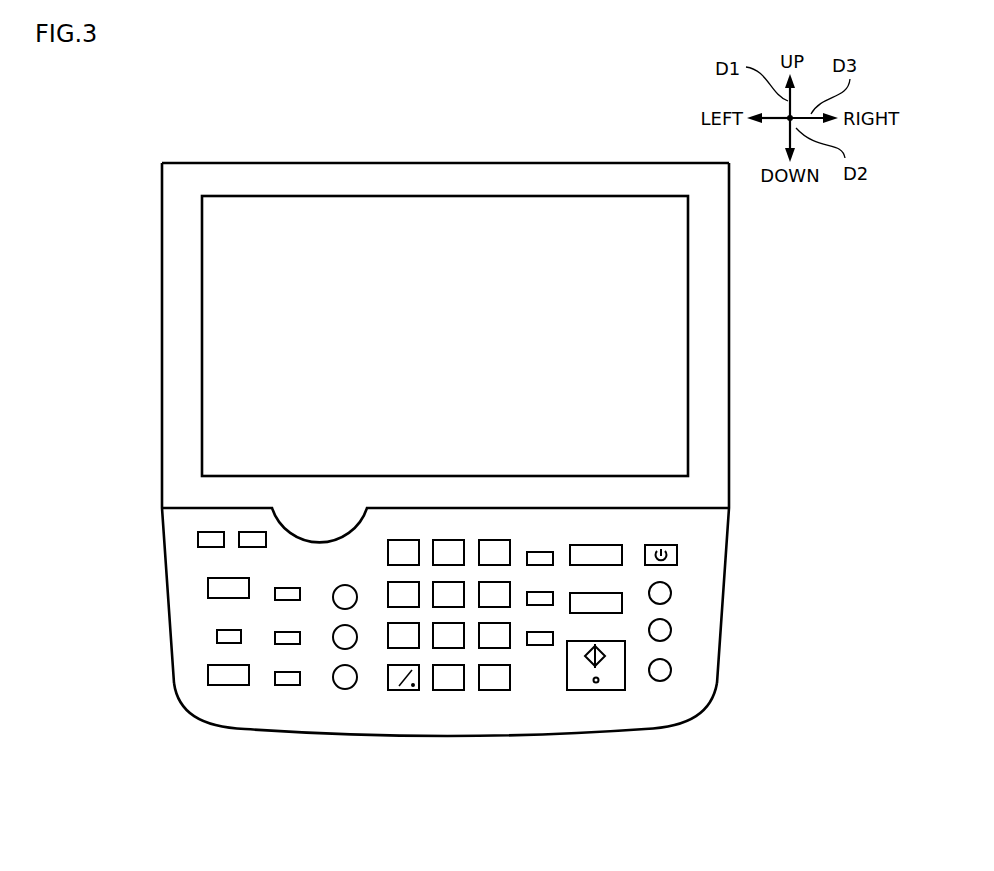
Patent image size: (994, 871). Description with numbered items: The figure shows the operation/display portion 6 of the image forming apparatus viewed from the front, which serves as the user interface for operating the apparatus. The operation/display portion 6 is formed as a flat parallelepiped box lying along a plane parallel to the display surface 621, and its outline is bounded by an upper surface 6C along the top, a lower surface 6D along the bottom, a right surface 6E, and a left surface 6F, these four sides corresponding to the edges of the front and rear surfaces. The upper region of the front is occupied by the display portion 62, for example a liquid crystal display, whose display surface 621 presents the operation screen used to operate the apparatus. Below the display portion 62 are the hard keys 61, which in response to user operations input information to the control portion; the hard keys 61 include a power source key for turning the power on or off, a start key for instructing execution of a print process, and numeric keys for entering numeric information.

The operation/display portion 6 is at (158, 146).
The upper surface 6C is at (450, 163).
The lower surface 6D is at (443, 735).
The right surface 6E is at (730, 398).
The left surface 6F is at (162, 399).
The hard keys 61 is at (184, 559).
The display portion 62 is at (177, 267).
The display surface 621 is at (202, 332).